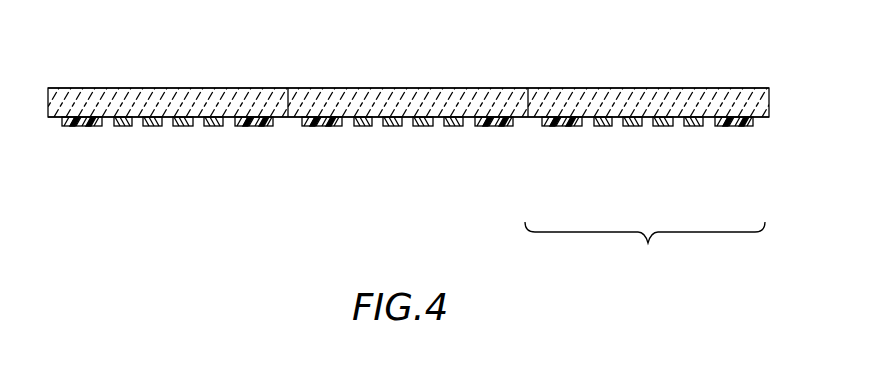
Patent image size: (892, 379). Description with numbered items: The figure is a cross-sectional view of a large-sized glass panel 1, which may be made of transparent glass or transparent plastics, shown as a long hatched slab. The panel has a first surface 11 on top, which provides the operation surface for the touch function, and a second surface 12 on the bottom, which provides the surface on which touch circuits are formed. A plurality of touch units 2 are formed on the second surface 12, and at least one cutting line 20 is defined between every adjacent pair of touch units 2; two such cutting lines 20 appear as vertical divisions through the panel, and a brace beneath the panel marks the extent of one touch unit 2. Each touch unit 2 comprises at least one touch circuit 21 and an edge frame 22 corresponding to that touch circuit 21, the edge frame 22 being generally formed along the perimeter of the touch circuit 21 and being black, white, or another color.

The large-sized glass panel 1 is at (703, 89).
The first surface 11 is at (740, 89).
The second surface 12 is at (763, 118).
The cutting line 20 is at (288, 89).
The touch circuit 21 is at (693, 127).
The edge frame 22 is at (735, 127).
The touch unit 2 is at (645, 248).